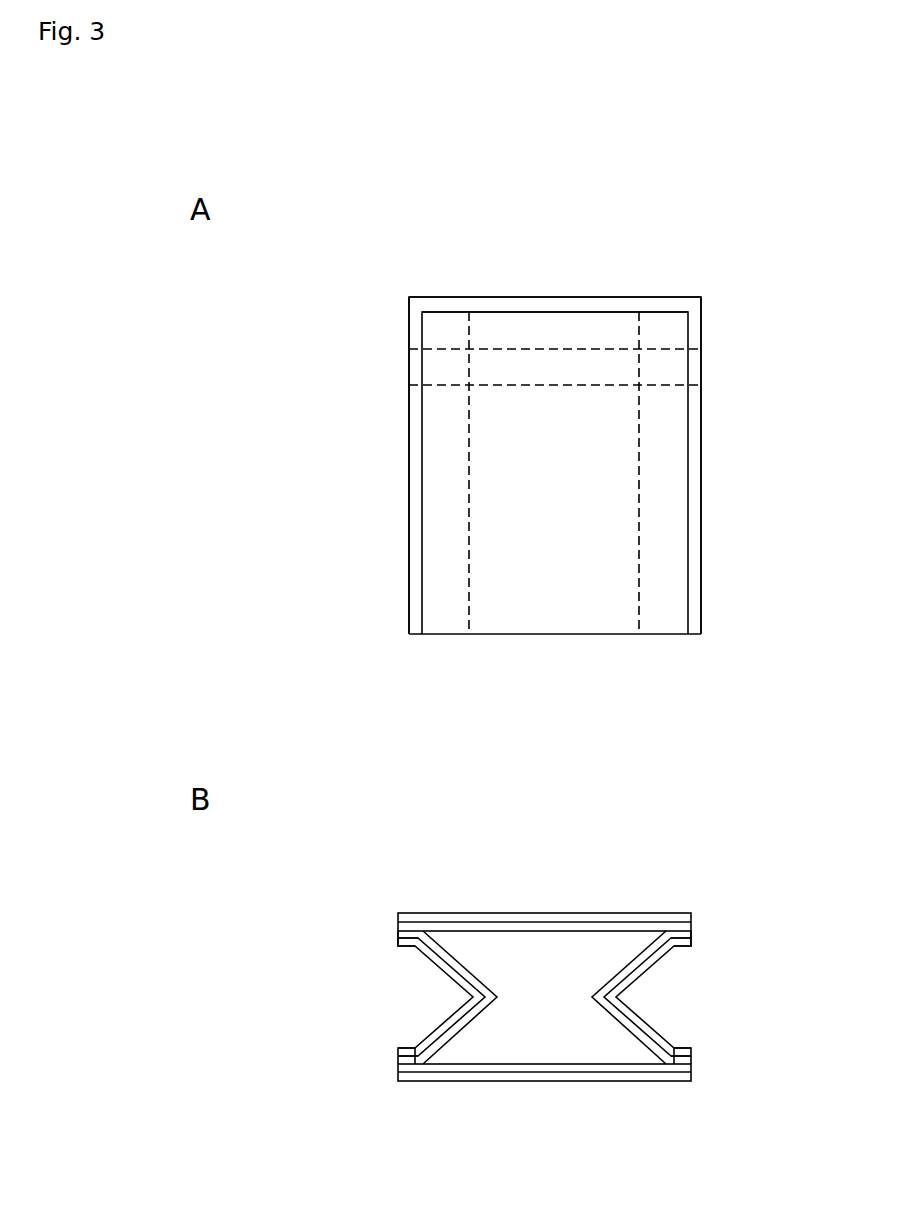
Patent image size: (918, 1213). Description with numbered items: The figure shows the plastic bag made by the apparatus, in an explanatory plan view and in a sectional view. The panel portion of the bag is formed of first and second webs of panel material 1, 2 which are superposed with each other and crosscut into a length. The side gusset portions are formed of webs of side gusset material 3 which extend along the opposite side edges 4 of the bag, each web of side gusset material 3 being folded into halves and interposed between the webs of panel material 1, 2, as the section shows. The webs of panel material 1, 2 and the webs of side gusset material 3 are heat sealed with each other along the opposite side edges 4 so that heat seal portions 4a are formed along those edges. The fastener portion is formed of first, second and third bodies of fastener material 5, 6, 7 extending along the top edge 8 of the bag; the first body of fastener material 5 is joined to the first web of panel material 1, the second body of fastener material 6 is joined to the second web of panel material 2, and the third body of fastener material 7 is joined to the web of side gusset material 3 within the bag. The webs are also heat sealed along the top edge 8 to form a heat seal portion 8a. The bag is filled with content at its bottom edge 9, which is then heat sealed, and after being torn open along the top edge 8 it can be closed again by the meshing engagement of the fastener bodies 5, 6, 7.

The first web of panel material 1 is at (550, 618).
The second web of panel material 2 is at (578, 1083).
The web of side gusset material 3 is at (655, 477).
The side edge 4 is at (409, 413).
The heat seal portion 4a is at (695, 405).
The first body of fastener material 5 is at (555, 362).
The second body of fastener material 6 is at (517, 1063).
The third body of fastener material 7 is at (452, 955).
The top edge 8 is at (548, 297).
The heat seal portion 8a is at (492, 310).
The bottom edge 9 is at (493, 635).